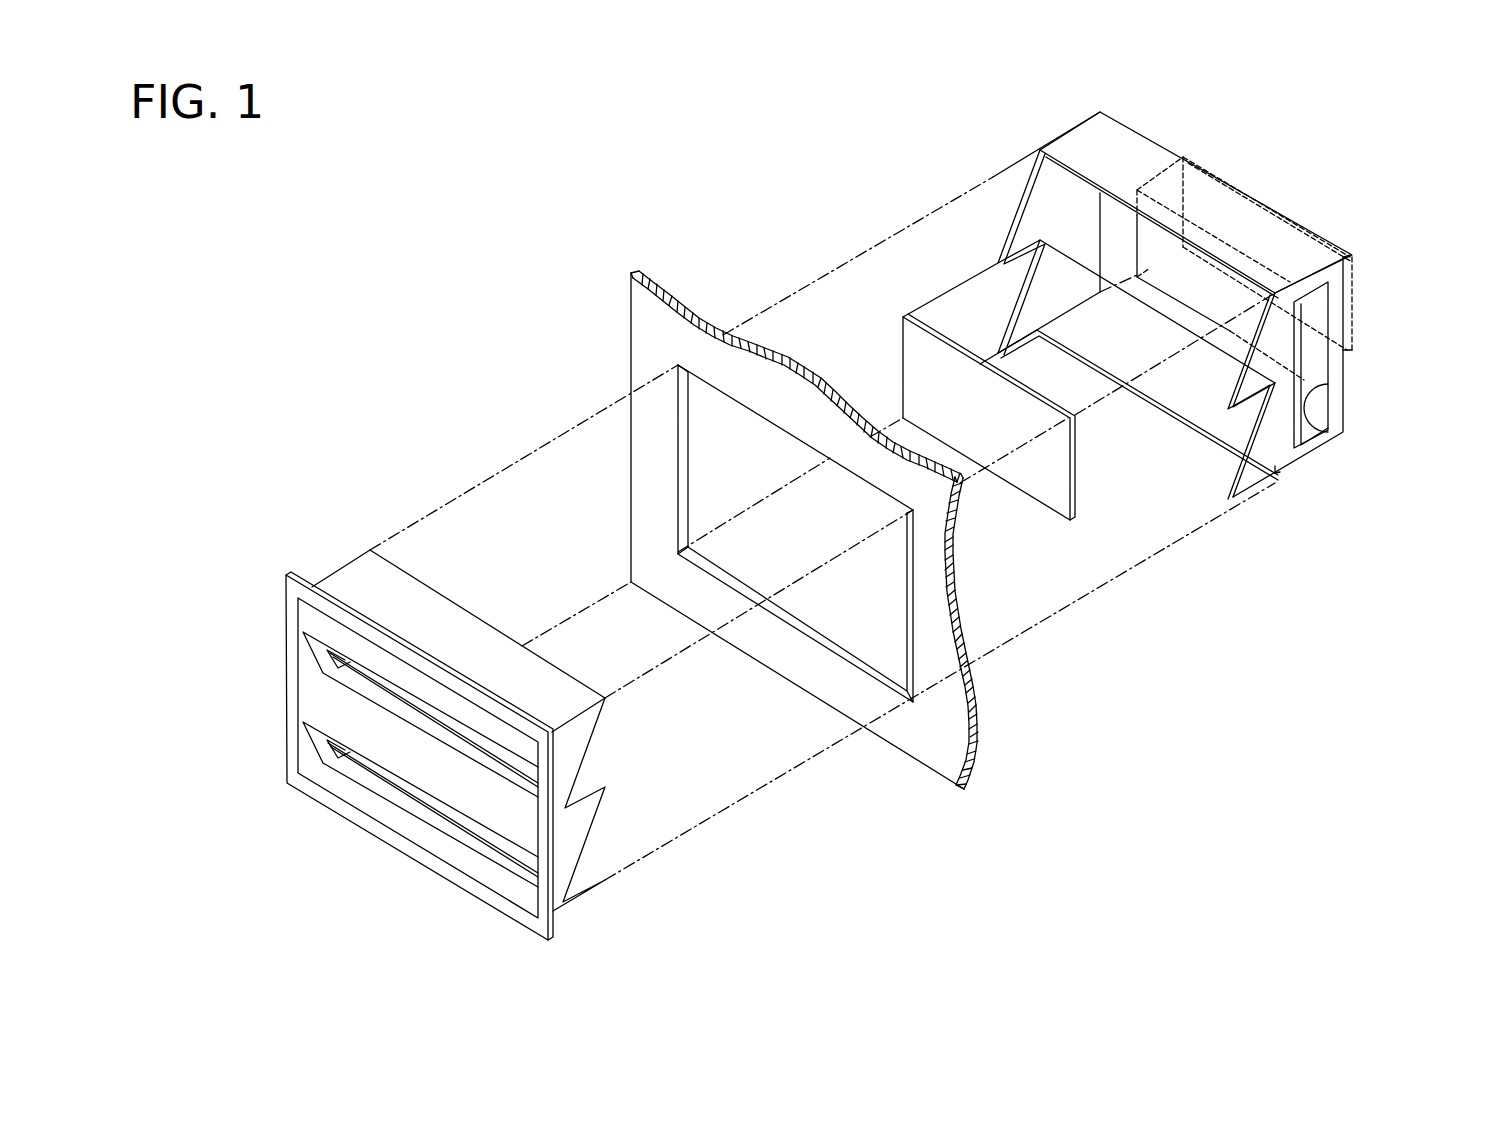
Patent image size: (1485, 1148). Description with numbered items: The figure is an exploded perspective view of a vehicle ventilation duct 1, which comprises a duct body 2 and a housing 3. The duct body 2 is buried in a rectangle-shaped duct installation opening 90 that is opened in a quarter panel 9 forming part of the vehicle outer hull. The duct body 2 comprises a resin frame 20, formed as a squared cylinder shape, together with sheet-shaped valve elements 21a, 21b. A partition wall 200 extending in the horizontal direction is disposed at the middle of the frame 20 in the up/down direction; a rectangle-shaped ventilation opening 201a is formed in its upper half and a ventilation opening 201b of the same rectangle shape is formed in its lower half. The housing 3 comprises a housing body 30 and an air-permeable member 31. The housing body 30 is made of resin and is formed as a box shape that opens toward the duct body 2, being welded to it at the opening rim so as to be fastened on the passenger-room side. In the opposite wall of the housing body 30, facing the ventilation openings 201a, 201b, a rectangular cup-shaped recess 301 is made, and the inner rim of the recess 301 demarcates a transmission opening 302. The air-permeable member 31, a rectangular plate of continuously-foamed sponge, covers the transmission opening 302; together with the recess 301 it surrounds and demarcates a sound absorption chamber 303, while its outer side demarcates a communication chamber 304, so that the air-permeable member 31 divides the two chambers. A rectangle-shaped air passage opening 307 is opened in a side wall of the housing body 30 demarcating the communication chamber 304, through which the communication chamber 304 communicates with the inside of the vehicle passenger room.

The ventilation duct 1 is at (452, 258).
The duct body 2 is at (290, 506).
The frame 20 is at (340, 582).
The sheet-shaped valve element 21a is at (322, 627).
The sheet-shaped valve element 21b is at (330, 720).
The ventilation opening 201a is at (341, 670).
The ventilation opening 201b is at (322, 765).
The partition wall 200 is at (587, 788).
The quarter panel 9 is at (643, 358).
The duct installation opening 90 is at (743, 583).
The housing 3 is at (988, 150).
The housing body 30 is at (1080, 148).
The air-permeable member 31 is at (928, 383).
The recess 301 is at (1352, 302).
The transmission opening 302 is at (1160, 283).
The sound absorption chamber 303 is at (1172, 243).
The communication chamber 304 is at (1168, 339).
The air passage opening 307 is at (1330, 432).